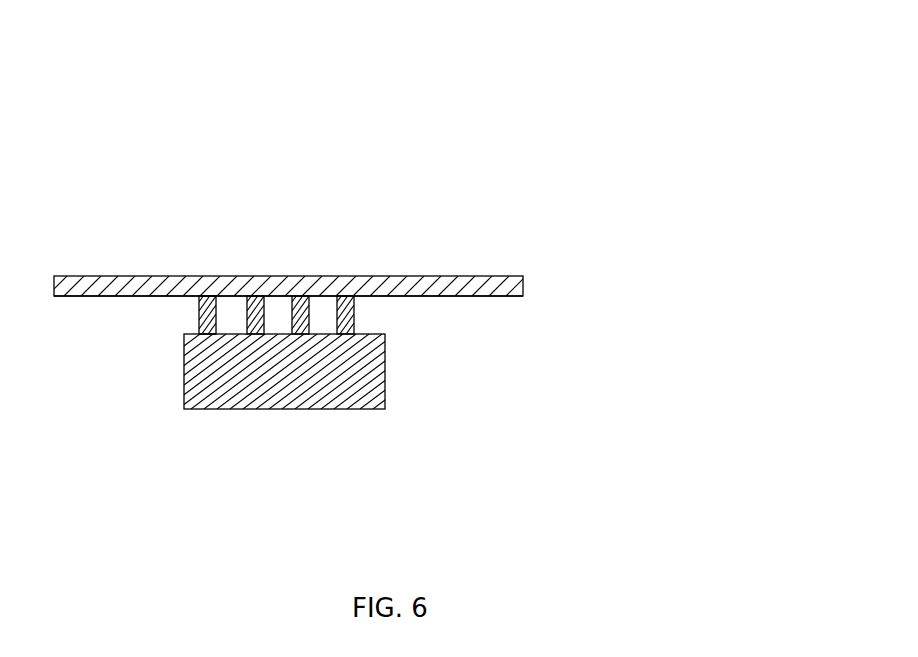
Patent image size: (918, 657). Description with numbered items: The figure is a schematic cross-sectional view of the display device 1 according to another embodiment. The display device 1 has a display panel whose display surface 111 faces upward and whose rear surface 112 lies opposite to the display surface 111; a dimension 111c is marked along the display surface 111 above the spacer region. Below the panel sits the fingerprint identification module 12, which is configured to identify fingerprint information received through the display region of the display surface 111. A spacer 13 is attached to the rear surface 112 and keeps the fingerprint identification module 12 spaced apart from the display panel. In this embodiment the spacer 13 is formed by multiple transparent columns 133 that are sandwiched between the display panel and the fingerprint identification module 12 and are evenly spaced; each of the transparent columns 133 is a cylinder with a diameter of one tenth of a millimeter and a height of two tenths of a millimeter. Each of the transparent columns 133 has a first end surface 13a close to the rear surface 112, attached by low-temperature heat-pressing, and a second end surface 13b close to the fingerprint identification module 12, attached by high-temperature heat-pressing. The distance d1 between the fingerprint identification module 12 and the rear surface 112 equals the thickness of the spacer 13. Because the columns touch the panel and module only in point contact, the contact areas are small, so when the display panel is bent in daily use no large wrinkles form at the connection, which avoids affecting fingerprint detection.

The display device 1 is at (515, 117).
The display surface 111 is at (505, 276).
The rear surface 112 is at (511, 296).
The width of spacer region 111c is at (384, 270).
The fingerprint identification module 12 is at (363, 398).
The spacer 13 is at (273, 420).
The transparent columns 133 is at (377, 483).
The first end surface 13a is at (200, 297).
The second end surface 13b is at (208, 337).
The distance d1 is at (132, 418).